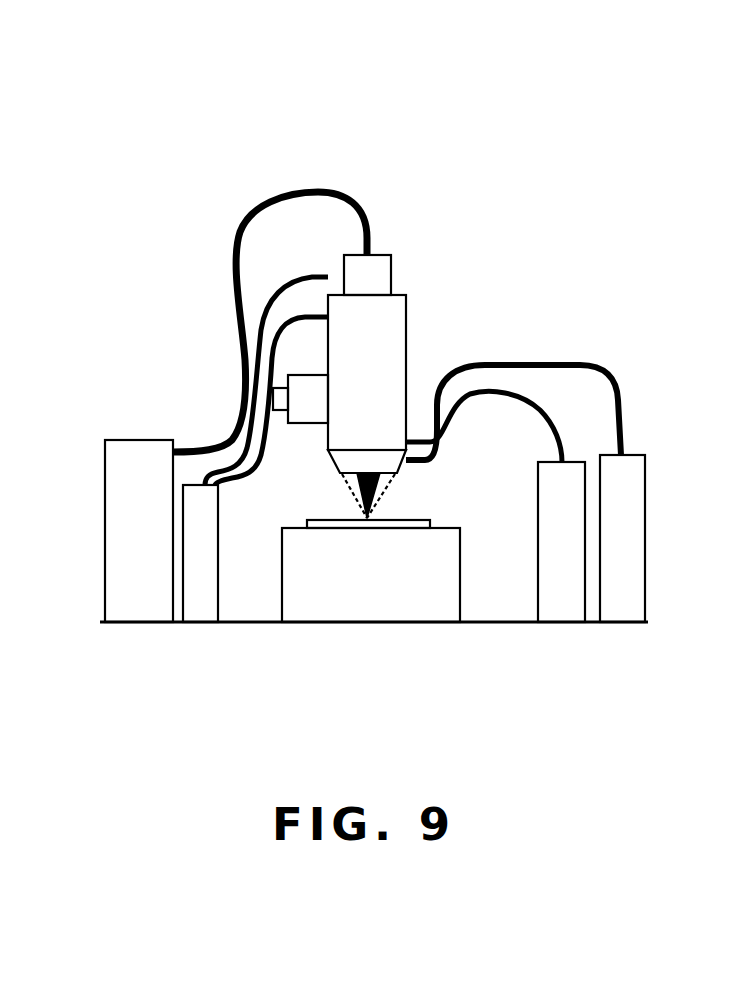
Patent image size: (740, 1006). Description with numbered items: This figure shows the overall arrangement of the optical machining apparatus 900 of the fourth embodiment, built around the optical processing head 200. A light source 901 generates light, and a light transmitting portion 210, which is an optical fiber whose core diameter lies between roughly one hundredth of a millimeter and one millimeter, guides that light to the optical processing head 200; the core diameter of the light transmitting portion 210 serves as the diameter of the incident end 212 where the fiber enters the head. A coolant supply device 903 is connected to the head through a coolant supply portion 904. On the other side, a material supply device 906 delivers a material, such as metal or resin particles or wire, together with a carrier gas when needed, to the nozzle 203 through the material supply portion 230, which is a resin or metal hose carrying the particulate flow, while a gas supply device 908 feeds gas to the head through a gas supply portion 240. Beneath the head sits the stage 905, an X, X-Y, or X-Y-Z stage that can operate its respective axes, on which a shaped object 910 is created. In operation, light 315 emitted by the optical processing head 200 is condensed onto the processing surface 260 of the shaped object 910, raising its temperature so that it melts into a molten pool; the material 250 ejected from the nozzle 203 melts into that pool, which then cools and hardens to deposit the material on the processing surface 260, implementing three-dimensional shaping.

The optical machining apparatus 900 is at (126, 106).
The optical processing head 200 is at (404, 290).
The incident end 212 is at (372, 252).
The light transmitting portion 210 is at (238, 240).
The nozzle 203 is at (338, 463).
The light 315 is at (375, 484).
The material 250 is at (379, 503).
The processing surface 260 is at (333, 519).
The shaped object 910 is at (395, 528).
The stage 905 is at (310, 622).
The light source 901 is at (120, 440).
The coolant supply device 903 is at (195, 622).
The coolant supply portion 904 is at (233, 467).
The material supply device 906 is at (565, 622).
The gas supply device 908 is at (625, 622).
The material supply portion 230 is at (542, 397).
The gas supply portion 240 is at (462, 365).